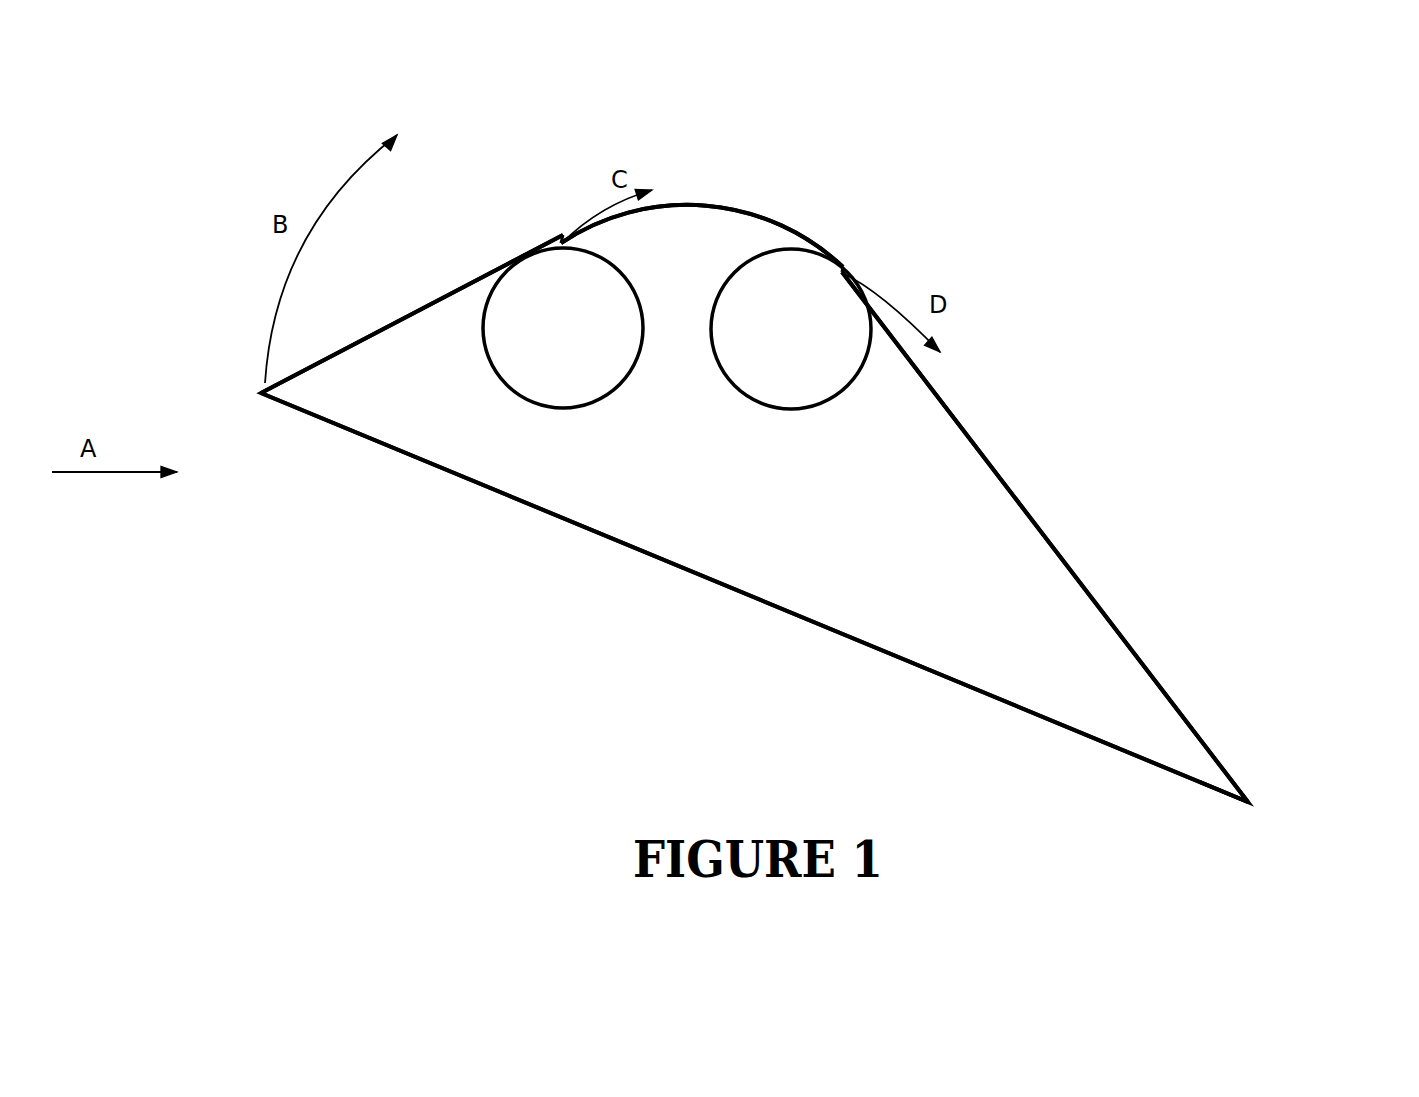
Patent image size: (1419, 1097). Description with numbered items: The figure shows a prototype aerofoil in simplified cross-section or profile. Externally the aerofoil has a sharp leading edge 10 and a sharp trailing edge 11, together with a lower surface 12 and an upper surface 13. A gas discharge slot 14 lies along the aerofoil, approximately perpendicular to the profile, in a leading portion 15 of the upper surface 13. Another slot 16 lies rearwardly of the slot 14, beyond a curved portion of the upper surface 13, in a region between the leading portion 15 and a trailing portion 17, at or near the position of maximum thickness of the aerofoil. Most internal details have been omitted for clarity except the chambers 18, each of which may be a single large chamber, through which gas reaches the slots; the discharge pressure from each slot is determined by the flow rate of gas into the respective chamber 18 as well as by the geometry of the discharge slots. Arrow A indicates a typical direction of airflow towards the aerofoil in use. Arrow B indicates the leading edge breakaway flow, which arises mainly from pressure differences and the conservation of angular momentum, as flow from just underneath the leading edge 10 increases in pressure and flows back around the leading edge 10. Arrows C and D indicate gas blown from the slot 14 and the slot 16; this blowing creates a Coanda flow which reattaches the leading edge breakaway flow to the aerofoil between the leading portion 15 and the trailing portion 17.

The leading edge 10 is at (293, 395).
The trailing edge 11 is at (1207, 773).
The lower surface 12 is at (662, 635).
The upper surface 13 is at (853, 233).
The gas discharge slot 14 is at (572, 225).
The leading portion 15 is at (398, 288).
The slot 16 is at (858, 270).
The trailing portion 17 is at (1115, 552).
The chambers 18 is at (677, 328).